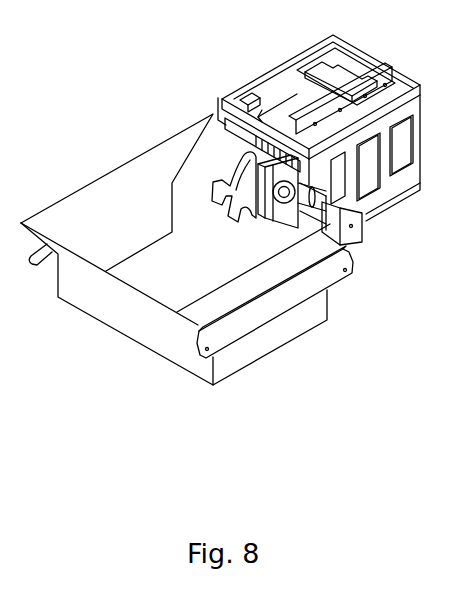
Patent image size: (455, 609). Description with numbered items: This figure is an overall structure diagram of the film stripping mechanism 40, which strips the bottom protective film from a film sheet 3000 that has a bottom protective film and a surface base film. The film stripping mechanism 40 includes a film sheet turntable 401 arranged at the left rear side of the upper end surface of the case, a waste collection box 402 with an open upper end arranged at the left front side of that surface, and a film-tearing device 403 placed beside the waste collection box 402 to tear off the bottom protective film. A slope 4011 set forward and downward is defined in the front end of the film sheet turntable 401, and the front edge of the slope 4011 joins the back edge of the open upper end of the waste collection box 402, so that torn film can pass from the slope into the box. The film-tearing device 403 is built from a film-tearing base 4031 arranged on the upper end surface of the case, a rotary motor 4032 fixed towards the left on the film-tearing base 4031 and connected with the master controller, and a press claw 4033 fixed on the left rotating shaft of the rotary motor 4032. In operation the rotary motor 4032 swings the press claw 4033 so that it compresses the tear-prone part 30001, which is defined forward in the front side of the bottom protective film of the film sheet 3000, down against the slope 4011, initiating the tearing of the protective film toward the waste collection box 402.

The film stripping mechanism 40 is at (34, 44).
The waste collection box 402 is at (187, 249).
The film sheet turntable 401 is at (283, 84).
The slope 4011 is at (243, 97).
The tear-prone part 30001 is at (250, 103).
The film sheet 3000 is at (302, 92).
The film-tearing device 403 is at (361, 238).
The film-tearing base 4031 is at (283, 223).
The rotary motor 4032 is at (357, 227).
The press claw 4033 is at (213, 186).